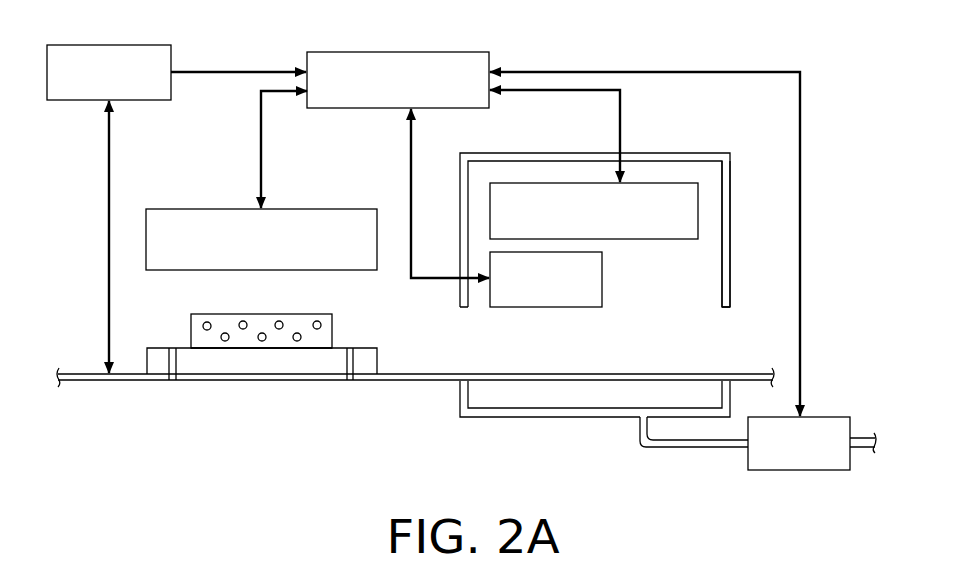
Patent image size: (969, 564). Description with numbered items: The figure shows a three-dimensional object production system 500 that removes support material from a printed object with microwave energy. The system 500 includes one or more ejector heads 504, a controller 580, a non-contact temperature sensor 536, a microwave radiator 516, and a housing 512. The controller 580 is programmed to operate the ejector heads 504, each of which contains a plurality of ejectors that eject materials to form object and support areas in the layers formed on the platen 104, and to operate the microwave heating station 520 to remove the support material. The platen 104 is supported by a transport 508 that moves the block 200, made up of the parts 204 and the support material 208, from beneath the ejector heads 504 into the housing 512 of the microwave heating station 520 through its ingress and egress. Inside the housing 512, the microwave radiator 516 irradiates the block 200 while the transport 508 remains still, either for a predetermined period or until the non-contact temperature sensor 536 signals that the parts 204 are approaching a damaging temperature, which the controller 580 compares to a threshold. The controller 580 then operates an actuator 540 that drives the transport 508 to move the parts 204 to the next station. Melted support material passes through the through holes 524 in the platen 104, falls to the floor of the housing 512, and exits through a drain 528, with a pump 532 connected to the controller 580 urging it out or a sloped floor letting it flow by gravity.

The three-dimensional object production system 500 is at (617, 48).
The actuator 540 is at (147, 100).
The controller 580 is at (359, 108).
The ejector heads 504 is at (307, 209).
The microwave heating station 520 is at (672, 143).
The housing 512 is at (731, 249).
The microwave radiator 516 is at (630, 239).
The non-contact temperature sensor 536 is at (545, 307).
The transport 508 is at (420, 381).
The platen 104 is at (377, 360).
The through holes 524 is at (172, 381).
The block 200 is at (332, 332).
The support material 208 is at (200, 337).
The parts 204 is at (298, 334).
The drain 528 is at (641, 408).
The pump 532 is at (820, 416).